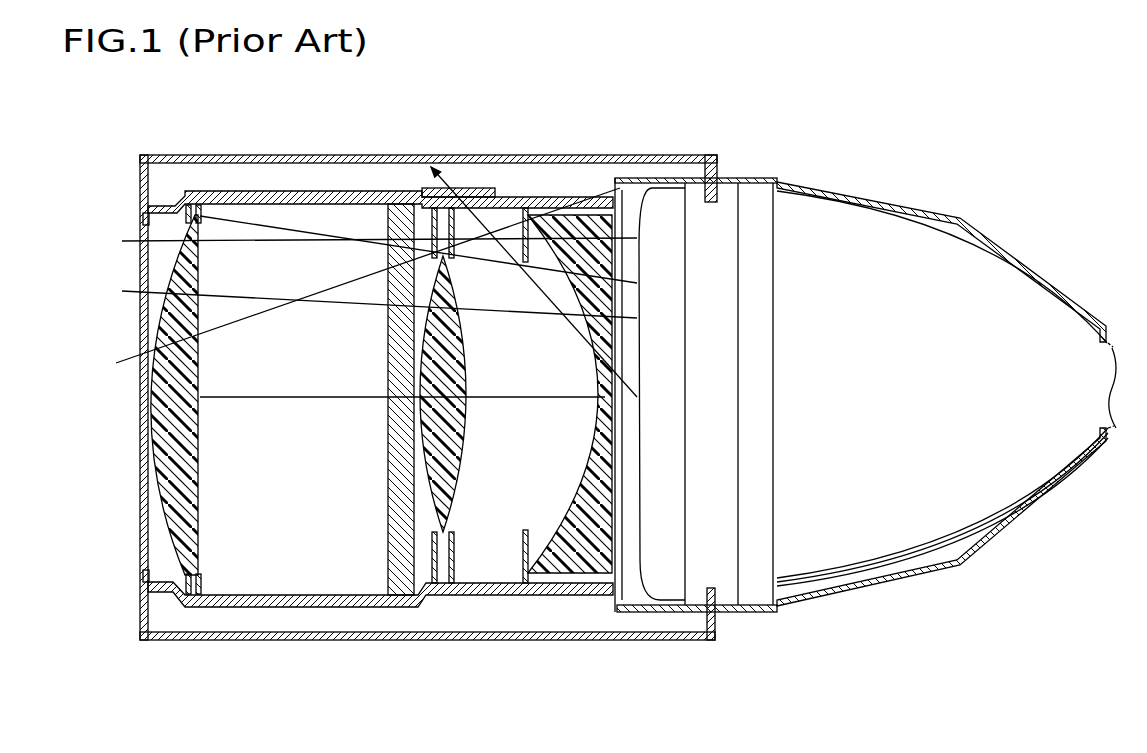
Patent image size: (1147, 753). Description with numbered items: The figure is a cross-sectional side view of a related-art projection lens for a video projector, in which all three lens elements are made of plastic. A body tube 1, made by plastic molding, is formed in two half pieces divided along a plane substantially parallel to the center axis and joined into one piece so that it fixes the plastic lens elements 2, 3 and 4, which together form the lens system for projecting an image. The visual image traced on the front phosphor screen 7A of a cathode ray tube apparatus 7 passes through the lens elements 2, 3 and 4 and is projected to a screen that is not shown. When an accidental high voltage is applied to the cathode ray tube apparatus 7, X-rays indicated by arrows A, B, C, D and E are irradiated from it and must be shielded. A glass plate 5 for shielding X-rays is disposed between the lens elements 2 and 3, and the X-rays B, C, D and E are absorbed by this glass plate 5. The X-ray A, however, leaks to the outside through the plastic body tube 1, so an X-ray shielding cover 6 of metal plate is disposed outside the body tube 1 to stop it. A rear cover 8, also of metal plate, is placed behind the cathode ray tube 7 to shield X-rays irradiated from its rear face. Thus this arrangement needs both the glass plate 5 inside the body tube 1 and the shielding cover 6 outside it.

The body tube 1 is at (317, 196).
The lens element 2 is at (170, 498).
The lens element 3 is at (453, 480).
The lens element 4 is at (580, 553).
The glass plate 5 is at (395, 535).
The X-ray shielding cover 6 is at (293, 640).
The cathode ray tube apparatus 7 is at (1023, 447).
The front phosphor screen 7A is at (640, 498).
The rear cover 8 is at (902, 575).
The X-ray A is at (436, 168).
The X-ray B is at (133, 205).
The X-ray C is at (364, 245).
The X-ray D is at (364, 298).
The X-ray E is at (356, 281).